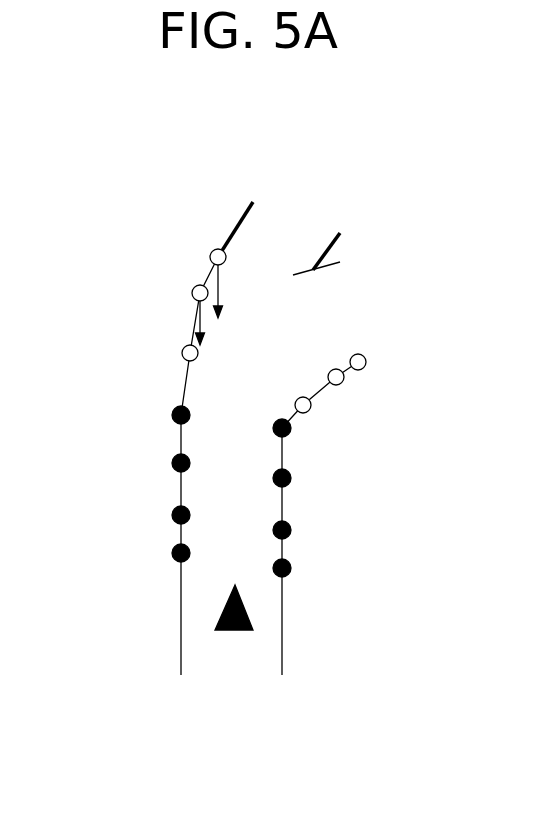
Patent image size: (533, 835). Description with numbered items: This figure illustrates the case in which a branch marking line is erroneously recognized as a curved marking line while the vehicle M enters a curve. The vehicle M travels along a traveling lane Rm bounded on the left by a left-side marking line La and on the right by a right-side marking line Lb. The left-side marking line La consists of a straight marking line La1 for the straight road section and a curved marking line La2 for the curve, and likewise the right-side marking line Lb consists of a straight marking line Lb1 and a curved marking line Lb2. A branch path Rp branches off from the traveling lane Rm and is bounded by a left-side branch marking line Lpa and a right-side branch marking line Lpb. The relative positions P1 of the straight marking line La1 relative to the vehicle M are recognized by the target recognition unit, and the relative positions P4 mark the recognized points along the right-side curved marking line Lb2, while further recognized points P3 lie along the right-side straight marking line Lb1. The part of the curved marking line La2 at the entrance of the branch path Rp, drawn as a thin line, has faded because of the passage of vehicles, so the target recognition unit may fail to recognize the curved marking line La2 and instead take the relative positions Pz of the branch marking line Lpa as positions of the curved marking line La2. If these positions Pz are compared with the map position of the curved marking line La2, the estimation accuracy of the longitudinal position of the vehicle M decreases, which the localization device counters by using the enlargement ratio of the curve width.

The left-side marking line La is at (207, 438).
The straight marking line La1 is at (134, 380).
The curved marking line La2 is at (185, 368).
The right-side marking line Lb is at (393, 516).
The straight marking line Lb1 is at (393, 425).
The curved marking line Lb2 is at (393, 358).
The left-side branch marking line Lpa is at (134, 193).
The right-side branch marking line Lpb is at (333, 247).
The branch path Rp is at (345, 214).
The traveling lane Rm is at (282, 686).
The relative positions of the straight marking line P1 is at (190, 550).
The third connection points P3 is at (276, 434).
The relative positions of the right-side curved marking line P4 is at (352, 357).
The relative positions of the branch marking line Pz is at (183, 350).
The vehicle M is at (235, 630).